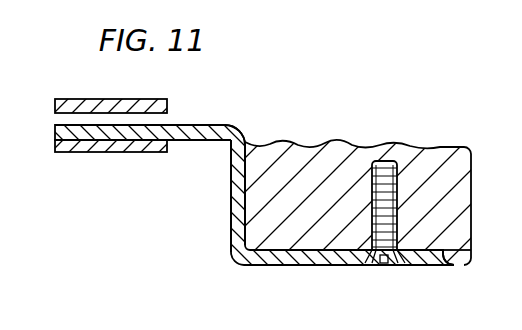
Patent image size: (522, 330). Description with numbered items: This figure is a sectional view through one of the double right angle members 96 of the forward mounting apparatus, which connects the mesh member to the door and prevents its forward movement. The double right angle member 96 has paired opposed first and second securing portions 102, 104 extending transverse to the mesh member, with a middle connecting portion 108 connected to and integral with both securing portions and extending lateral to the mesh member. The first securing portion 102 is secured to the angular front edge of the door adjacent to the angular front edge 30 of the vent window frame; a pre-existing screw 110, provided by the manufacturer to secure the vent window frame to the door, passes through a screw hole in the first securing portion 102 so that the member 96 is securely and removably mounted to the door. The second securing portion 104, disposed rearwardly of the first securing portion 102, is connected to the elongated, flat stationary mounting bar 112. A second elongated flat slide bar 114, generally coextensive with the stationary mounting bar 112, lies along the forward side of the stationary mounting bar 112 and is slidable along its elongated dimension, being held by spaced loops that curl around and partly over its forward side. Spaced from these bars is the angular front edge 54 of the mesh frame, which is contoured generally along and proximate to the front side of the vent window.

The angular front edge 30 is at (441, 158).
The angular front edge 54 is at (117, 105).
The double right angle member 96 is at (254, 201).
The first securing portion 102 is at (287, 266).
The second securing portion 104 is at (203, 131).
The middle connecting portion 108 is at (230, 191).
The screw 110 is at (390, 265).
The stationary mounting bar 112 is at (57, 125).
The slide bar 114 is at (61, 144).